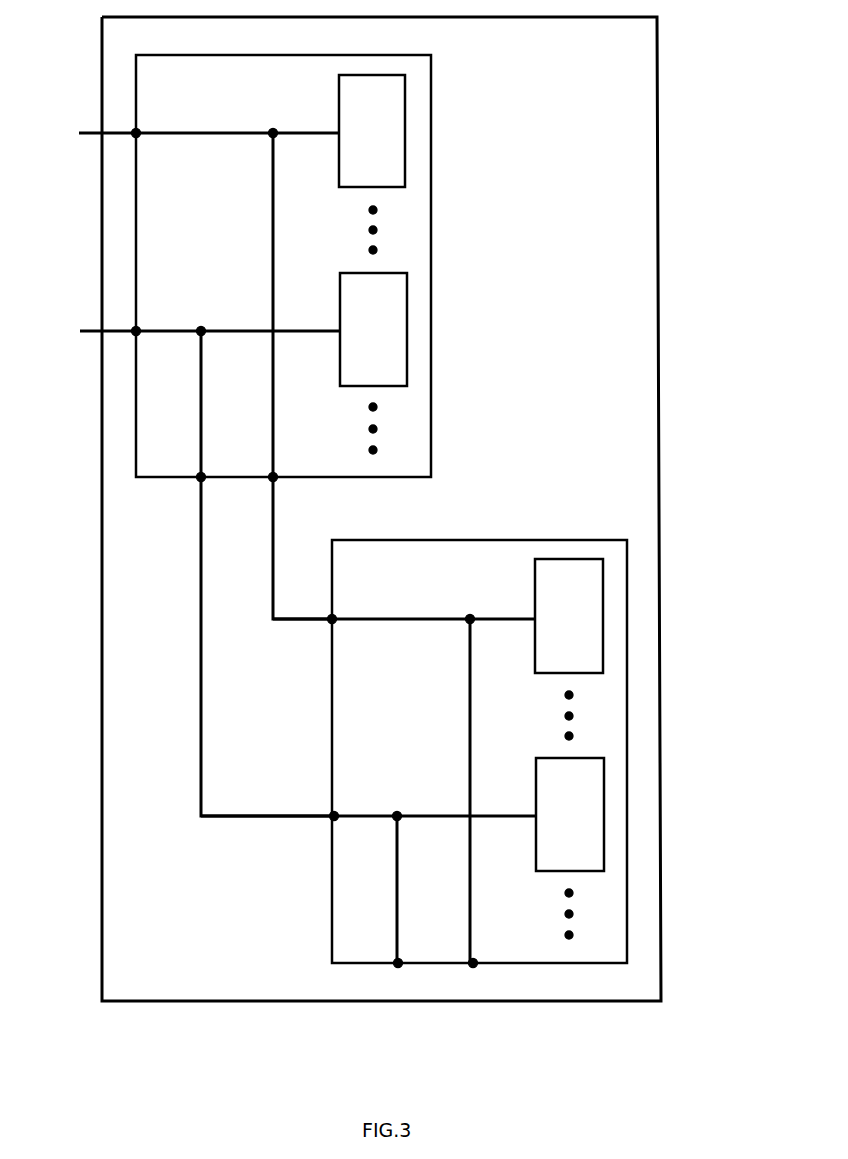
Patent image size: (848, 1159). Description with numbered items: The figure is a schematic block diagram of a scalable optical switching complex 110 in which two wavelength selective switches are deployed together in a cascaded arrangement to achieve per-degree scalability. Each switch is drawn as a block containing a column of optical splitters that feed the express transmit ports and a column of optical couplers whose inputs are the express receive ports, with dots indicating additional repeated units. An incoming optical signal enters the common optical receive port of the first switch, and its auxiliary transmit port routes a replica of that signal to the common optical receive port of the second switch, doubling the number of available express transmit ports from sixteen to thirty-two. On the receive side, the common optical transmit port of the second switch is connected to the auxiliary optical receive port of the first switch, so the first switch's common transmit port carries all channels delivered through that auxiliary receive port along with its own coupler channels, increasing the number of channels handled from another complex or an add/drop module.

The scalable optical switching complex 110 is at (658, 85).